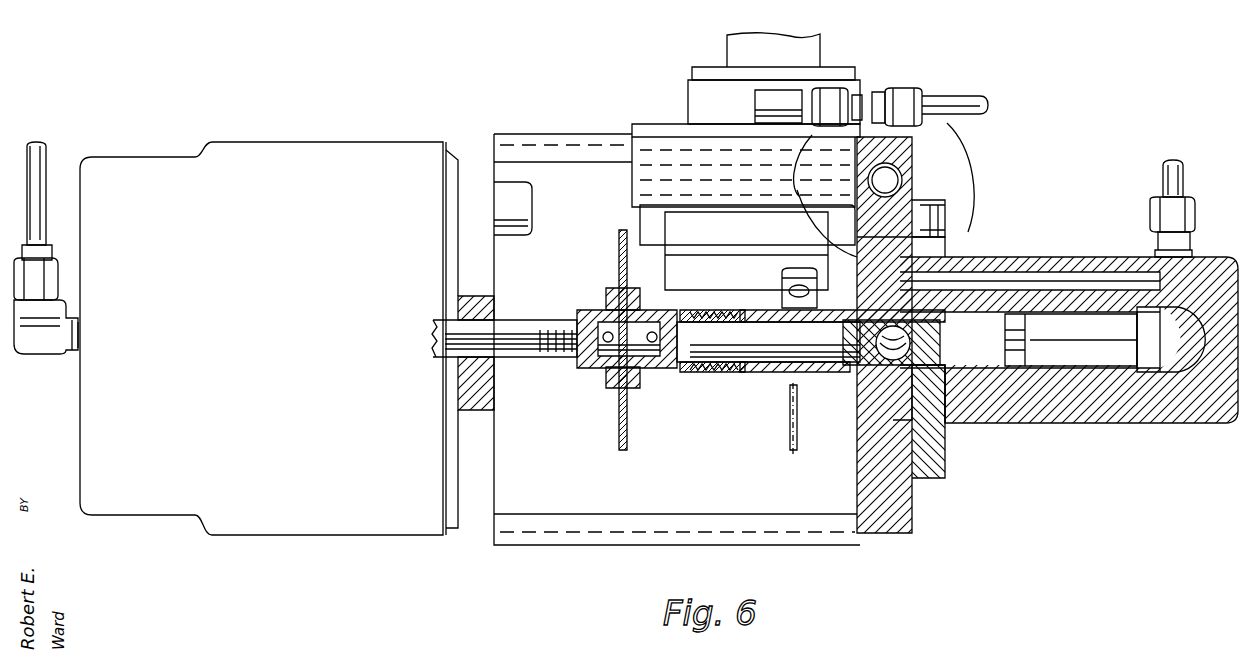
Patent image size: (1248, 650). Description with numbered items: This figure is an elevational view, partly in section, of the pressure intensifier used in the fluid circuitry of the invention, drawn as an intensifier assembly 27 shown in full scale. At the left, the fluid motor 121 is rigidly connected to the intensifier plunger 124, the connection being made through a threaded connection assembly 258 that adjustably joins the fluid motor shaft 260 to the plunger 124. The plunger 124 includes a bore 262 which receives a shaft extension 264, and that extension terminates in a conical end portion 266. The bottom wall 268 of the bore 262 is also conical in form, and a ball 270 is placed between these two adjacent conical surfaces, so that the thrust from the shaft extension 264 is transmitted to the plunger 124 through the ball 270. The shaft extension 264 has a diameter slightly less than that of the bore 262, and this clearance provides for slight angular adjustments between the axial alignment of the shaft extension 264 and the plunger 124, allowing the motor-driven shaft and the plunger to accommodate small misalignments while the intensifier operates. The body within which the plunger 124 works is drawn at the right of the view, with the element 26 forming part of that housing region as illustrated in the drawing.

The fluid motor 121 is at (292, 158).
The intensifier assembly 27 is at (572, 547).
The bracket body 26 is at (1097, 365).
The intensifier plunger 124 is at (1005, 340).
The fluid motor shaft 260 is at (515, 335).
The threaded connection assembly 258 is at (658, 376).
The shaft extension 264 is at (768, 322).
The bore 262 is at (850, 350).
The ball 270 is at (890, 352).
The bottom wall 268 is at (905, 345).
The conical end portion 266 is at (925, 315).